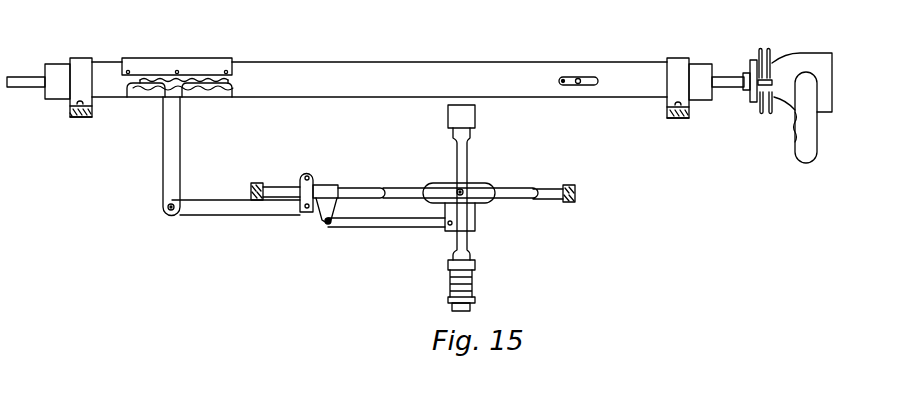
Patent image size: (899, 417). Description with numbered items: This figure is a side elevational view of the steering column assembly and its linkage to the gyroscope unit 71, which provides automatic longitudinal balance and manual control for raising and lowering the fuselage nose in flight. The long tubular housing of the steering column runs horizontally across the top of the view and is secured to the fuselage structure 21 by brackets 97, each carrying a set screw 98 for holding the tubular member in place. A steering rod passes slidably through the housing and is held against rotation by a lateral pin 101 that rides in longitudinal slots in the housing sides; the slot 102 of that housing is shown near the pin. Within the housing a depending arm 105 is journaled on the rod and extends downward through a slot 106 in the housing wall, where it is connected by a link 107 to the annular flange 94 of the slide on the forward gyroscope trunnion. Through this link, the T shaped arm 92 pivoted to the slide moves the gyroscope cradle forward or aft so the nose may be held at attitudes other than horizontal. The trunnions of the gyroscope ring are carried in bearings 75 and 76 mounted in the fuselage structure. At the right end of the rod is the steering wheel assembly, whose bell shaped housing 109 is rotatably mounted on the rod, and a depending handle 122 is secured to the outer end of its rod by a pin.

The bracket 97 is at (68, 55).
The set screw 98 is at (84, 57).
The fuselage structure 21 is at (68, 118).
The slot 102 is at (565, 78).
The lateral pin 101 is at (578, 78).
The slot 106 is at (207, 100).
The depending arm 105 is at (172, 143).
The link 107 is at (205, 207).
The bearing 75 is at (257, 183).
The annular integral flange 94 is at (308, 193).
The gyroscope unit 71 is at (473, 172).
The bearing 76 is at (572, 185).
The T shaped arm 92 is at (367, 224).
The bell shaped housing 109 is at (793, 110).
The depending handle 122 is at (805, 147).